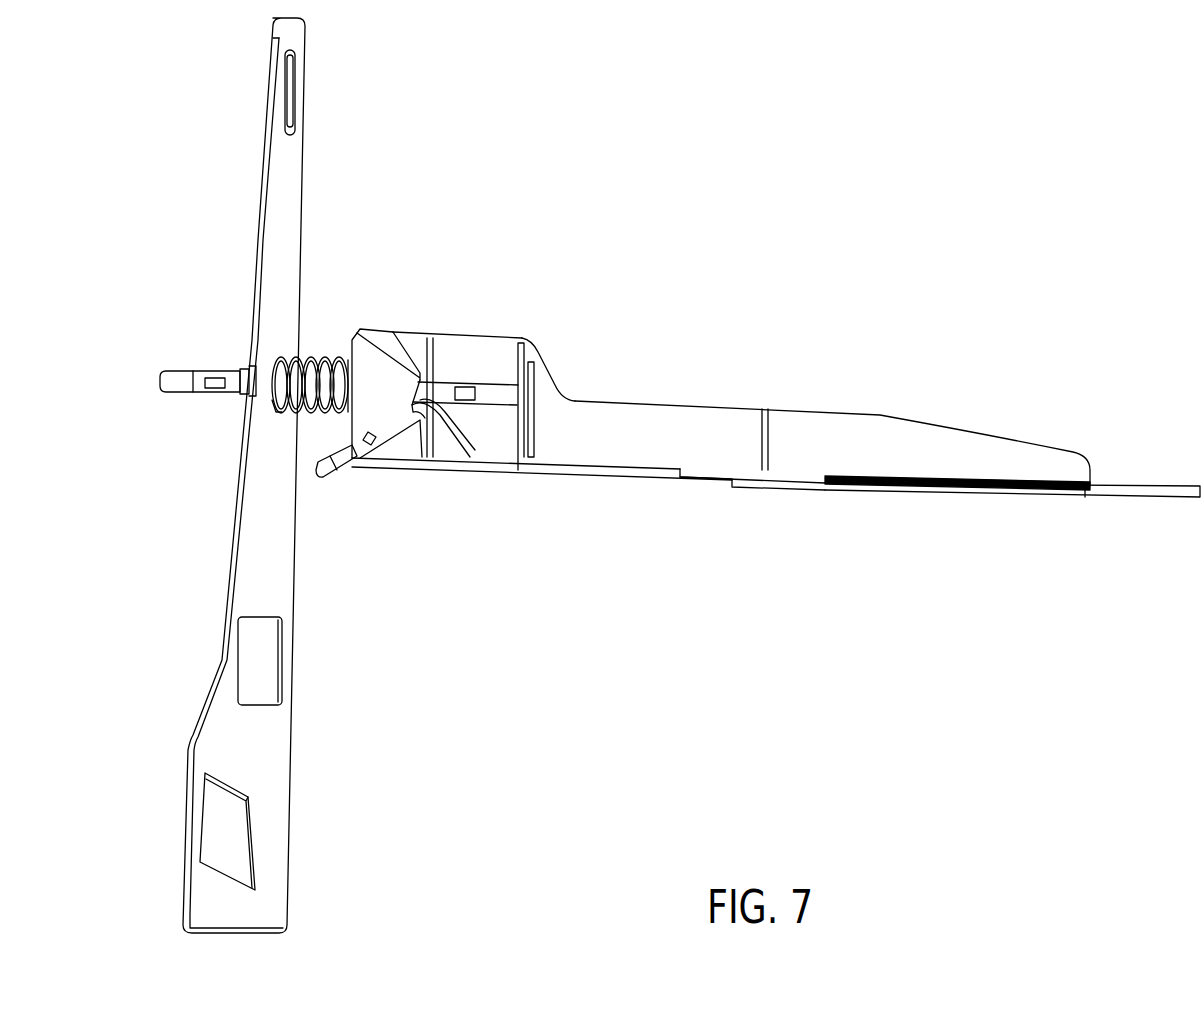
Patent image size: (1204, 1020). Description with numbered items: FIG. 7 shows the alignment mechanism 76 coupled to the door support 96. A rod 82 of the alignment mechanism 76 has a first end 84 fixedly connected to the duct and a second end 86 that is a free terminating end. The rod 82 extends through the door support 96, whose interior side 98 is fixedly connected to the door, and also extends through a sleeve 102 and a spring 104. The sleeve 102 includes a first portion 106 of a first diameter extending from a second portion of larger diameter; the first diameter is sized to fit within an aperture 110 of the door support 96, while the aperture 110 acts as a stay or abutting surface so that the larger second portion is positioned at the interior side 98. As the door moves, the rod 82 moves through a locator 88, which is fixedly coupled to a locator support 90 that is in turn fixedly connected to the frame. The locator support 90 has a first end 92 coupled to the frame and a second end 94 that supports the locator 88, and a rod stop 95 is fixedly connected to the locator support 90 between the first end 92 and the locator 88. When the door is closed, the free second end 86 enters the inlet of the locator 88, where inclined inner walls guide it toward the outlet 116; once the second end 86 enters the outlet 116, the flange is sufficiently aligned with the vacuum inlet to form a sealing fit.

The alignment mechanism 76 is at (390, 328).
The rod 82 is at (457, 376).
The first end 84 is at (163, 368).
The second end 86 is at (517, 388).
The locator 88 is at (355, 457).
The locator support 90 is at (826, 392).
The first end 92 is at (1148, 480).
The second end 94 is at (406, 479).
The rod stop 95 is at (535, 380).
The door support 96 is at (300, 50).
The interior side 98 is at (263, 566).
The sleeve 102 is at (246, 357).
The spring 104 is at (323, 355).
The first portion 106 is at (240, 393).
The aperture 110 is at (270, 401).
The outlet 116 is at (432, 390).